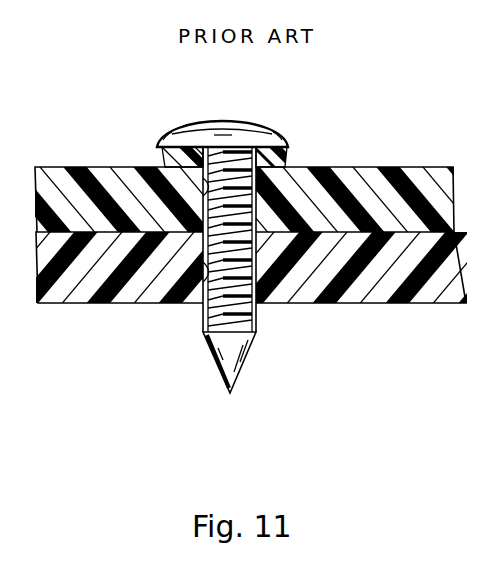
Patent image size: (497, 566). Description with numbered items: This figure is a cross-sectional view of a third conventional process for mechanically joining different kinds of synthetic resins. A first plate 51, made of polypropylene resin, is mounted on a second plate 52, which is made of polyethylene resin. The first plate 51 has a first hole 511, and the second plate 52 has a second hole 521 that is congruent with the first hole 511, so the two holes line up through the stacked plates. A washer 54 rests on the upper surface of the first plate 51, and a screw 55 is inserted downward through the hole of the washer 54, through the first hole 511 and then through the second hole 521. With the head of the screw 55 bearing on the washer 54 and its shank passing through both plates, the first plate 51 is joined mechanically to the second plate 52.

The first plate 51 is at (402, 174).
The second plate 52 is at (418, 298).
The first hole 511 is at (164, 166).
The second hole 521 is at (206, 306).
The washer 54 is at (290, 158).
The screw 55 is at (196, 122).